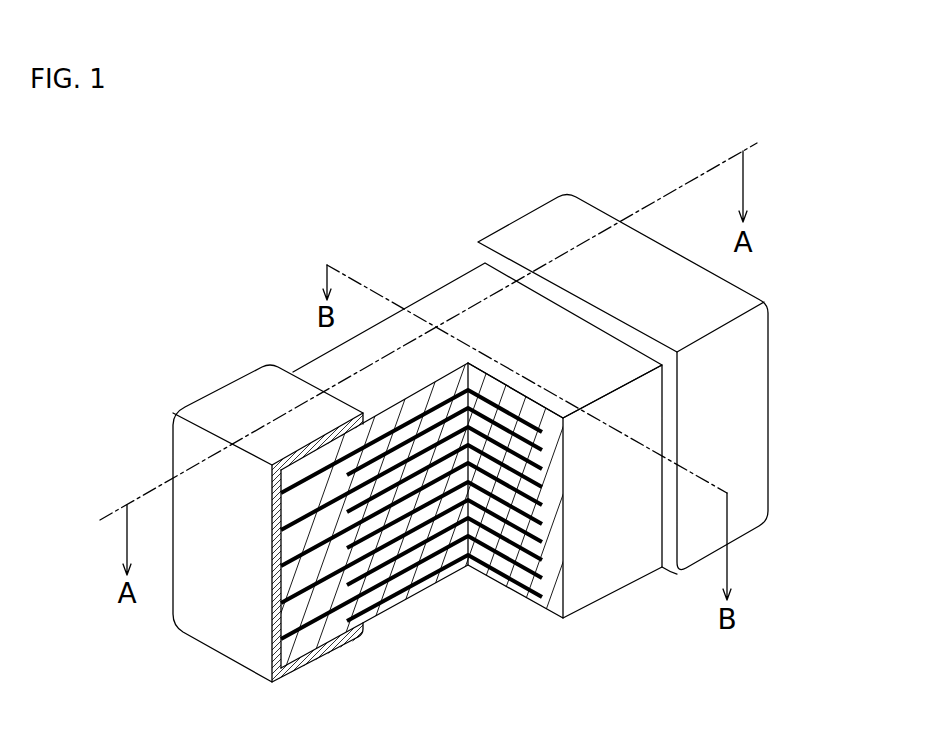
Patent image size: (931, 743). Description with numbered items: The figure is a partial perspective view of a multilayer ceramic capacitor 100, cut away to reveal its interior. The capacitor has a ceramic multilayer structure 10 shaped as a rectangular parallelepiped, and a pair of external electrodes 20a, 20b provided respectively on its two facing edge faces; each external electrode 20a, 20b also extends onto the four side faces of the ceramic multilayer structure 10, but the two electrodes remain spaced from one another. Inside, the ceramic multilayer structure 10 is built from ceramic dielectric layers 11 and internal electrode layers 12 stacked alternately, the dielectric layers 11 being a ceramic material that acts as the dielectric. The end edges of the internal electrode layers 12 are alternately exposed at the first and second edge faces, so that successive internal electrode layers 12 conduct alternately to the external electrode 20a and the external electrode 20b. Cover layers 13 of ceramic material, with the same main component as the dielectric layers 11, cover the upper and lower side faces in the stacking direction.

The multilayer ceramic capacitor 100 is at (822, 130).
The ceramic multilayer structure 10 is at (473, 471).
The ceramic dielectric layer 11 is at (390, 571).
The internal electrode layer 12 is at (361, 604).
The cover layer 13 is at (437, 303).
The external electrode 20a is at (201, 399).
The external electrode 20b is at (526, 236).